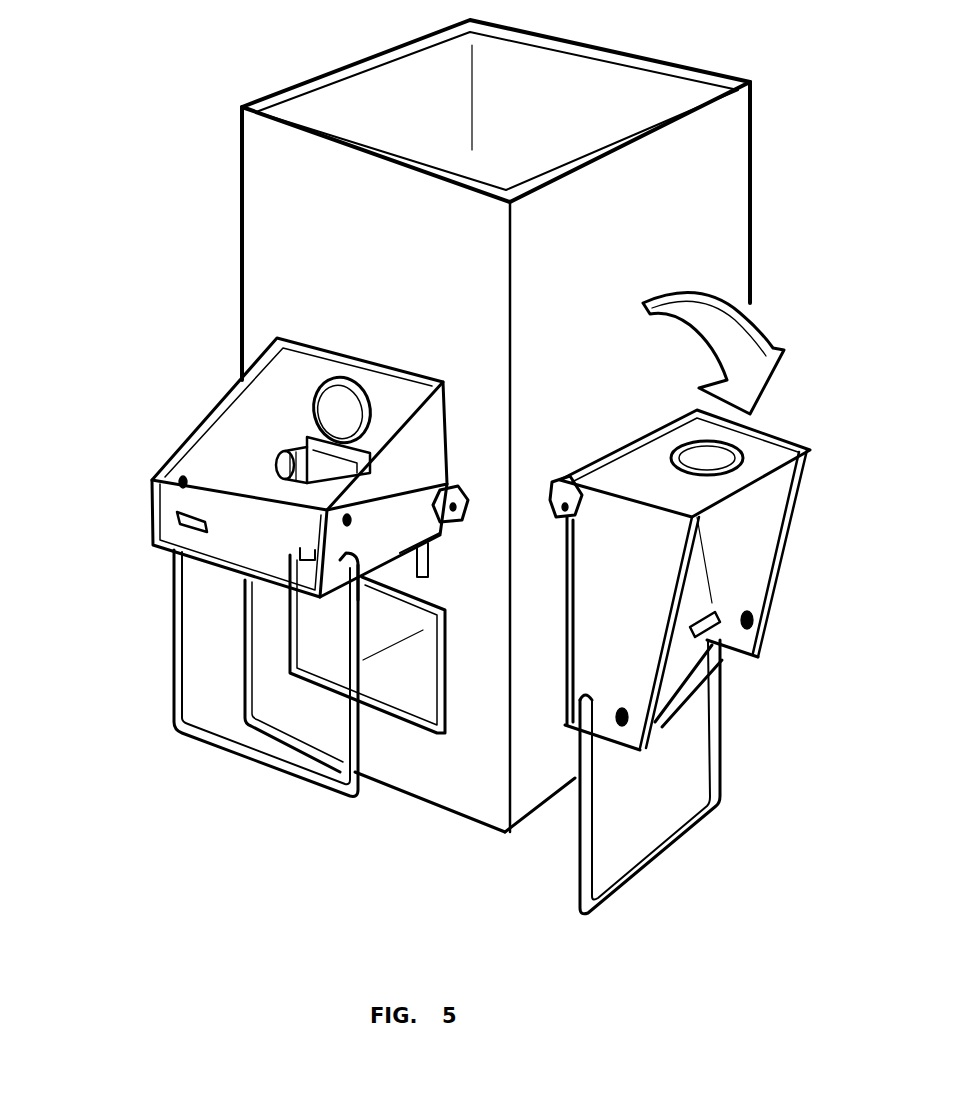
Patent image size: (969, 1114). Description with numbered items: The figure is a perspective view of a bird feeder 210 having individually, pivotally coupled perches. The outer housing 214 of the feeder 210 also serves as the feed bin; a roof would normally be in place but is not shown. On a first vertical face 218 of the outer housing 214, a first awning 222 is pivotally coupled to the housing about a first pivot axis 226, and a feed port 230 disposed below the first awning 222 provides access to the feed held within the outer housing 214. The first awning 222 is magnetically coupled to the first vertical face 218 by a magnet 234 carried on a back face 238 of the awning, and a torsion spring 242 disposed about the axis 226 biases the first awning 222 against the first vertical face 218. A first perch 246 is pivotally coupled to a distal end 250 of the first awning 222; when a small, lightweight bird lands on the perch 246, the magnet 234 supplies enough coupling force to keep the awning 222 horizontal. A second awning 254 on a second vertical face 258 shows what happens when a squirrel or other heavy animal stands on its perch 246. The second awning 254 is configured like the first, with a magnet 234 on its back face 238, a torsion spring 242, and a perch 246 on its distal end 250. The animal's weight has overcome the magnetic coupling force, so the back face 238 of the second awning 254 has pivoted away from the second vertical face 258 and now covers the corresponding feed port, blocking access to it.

The feeder 210 is at (178, 74).
The outer housing 214 is at (712, 150).
The first vertical face 218 is at (333, 248).
The first awning 222 is at (408, 452).
The first pivot axis 226 is at (467, 500).
The feed port 230 is at (408, 670).
The magnet 234 is at (358, 365).
The back face 238 is at (340, 352).
The torsion spring 242 is at (293, 484).
The perch 246 is at (173, 712).
The distal end 250 is at (152, 535).
The second awning 254 is at (770, 543).
The second vertical face 258 is at (668, 242).